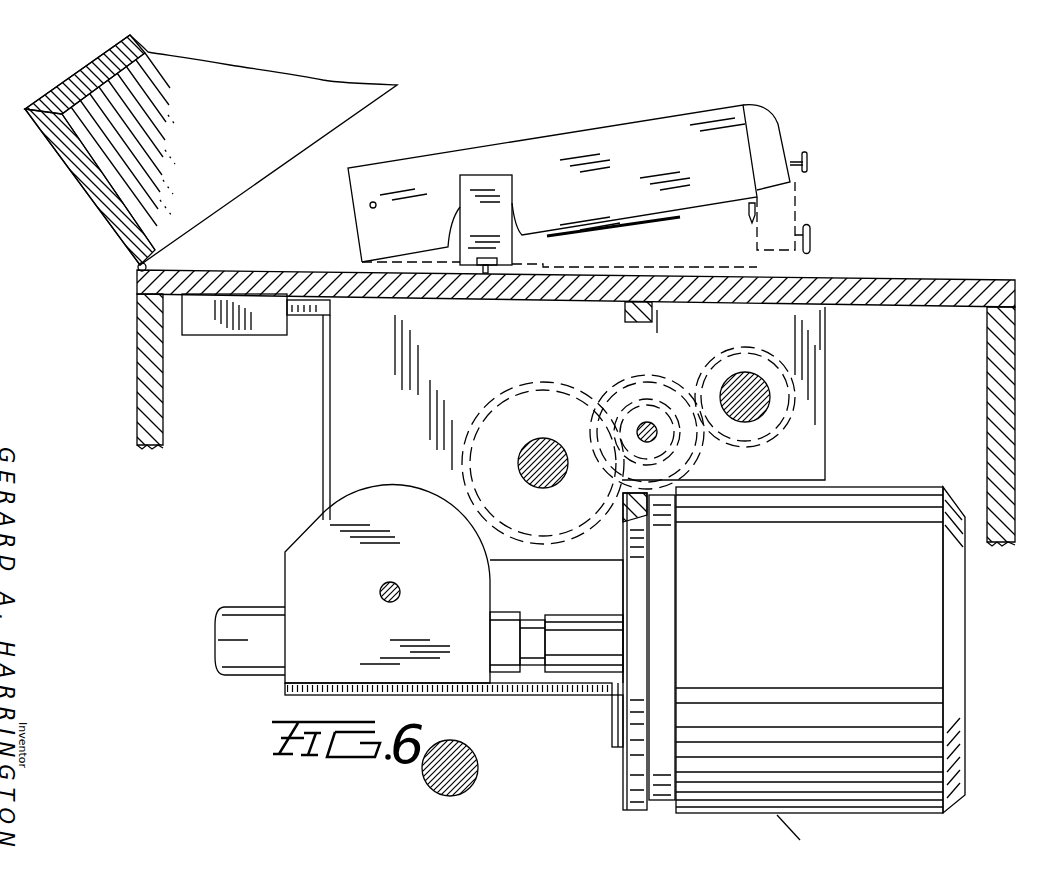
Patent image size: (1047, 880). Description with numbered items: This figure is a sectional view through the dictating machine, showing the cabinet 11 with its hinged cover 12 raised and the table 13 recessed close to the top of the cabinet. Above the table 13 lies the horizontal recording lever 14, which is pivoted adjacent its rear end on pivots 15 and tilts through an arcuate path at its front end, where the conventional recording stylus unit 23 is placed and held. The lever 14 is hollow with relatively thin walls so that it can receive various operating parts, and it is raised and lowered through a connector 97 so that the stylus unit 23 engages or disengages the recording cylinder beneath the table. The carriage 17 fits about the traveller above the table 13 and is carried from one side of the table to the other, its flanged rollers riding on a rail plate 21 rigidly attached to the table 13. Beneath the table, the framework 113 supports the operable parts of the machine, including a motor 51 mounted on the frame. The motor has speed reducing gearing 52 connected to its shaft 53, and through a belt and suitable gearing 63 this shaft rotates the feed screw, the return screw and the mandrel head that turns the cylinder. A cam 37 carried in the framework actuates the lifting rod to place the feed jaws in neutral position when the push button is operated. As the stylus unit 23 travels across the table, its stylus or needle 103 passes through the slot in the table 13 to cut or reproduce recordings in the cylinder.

The cabinet 11 is at (135, 355).
The cover 12 is at (65, 172).
The table 13 is at (943, 280).
The recording lever 14 is at (620, 133).
The pivots 15 is at (370, 205).
The carriage 17 is at (513, 248).
The rail plate 21 is at (482, 277).
The recording stylus unit 23 is at (782, 120).
The cam 37 is at (473, 752).
The motor 51 is at (794, 650).
The speed reducing gearing 52 is at (387, 584).
The shaft 53 is at (529, 630).
The gearing 63 is at (845, 380).
The connector 97 is at (640, 222).
The stylus 103 is at (750, 210).
The framework 113 is at (800, 330).